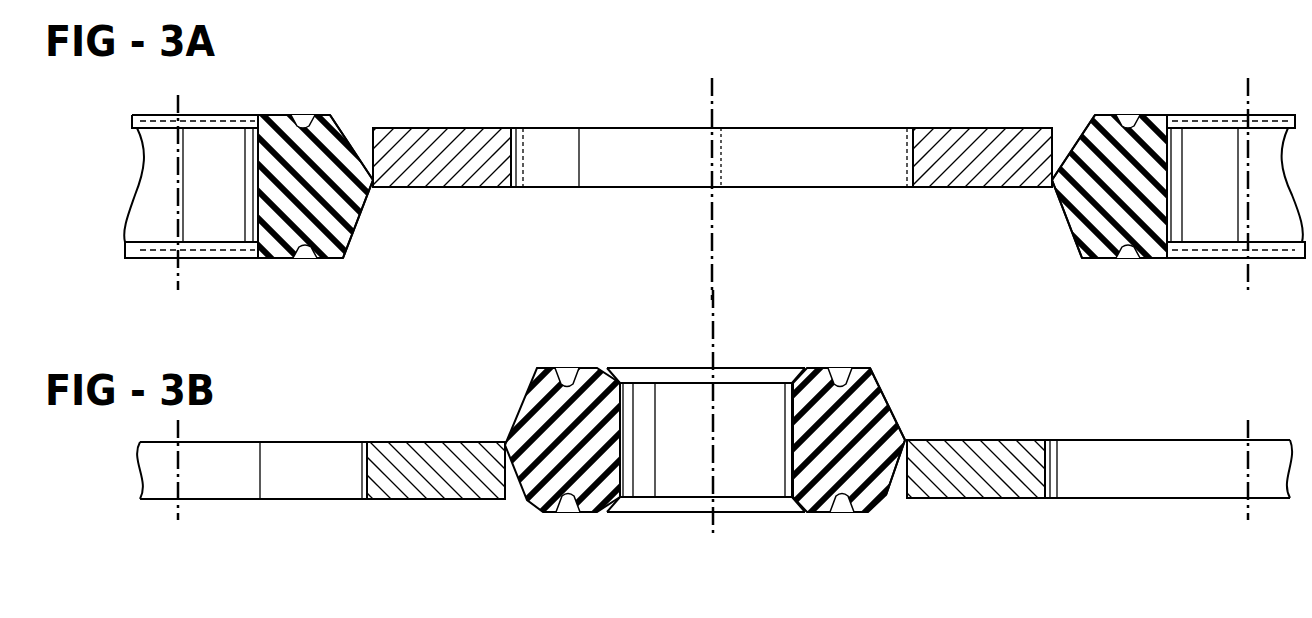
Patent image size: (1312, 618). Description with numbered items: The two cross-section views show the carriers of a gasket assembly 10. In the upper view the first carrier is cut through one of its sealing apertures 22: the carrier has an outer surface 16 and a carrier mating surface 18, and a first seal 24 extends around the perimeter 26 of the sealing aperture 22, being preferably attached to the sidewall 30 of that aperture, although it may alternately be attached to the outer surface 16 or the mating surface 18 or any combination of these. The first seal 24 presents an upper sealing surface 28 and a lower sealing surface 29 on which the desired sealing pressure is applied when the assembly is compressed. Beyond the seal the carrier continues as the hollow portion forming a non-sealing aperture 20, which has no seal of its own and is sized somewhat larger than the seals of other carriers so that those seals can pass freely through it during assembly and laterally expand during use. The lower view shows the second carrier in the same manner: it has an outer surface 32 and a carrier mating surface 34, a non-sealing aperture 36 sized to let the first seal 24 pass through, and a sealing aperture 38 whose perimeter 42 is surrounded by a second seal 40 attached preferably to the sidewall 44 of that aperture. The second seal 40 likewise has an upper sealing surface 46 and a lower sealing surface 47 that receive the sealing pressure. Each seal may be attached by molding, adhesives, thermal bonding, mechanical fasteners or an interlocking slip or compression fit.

In FIG. 3A, the gasket assembly 10 is at (575, 90).
In FIG. 3A, the outer surface 16 is at (493, 128).
In FIG. 3A, the carrier mating surface 18 is at (470, 187).
In FIG. 3A, the non-sealing aperture 20 is at (812, 145).
In FIG. 3A, the sealing aperture 22 is at (202, 172).
In FIG. 3A, the first seal 24 is at (328, 135).
In FIG. 3A, the perimeter 26 is at (373, 130).
In FIG. 3A, the upper sealing surface 28 is at (278, 117).
In FIG. 3A, the lower sealing surface 29 is at (335, 258).
In FIG. 3A, the sidewall 30 is at (366, 192).
In FIG. 3B, the outer surface 32 is at (990, 498).
In FIG. 3B, the carrier mating surface 34 is at (993, 440).
In FIG. 3B, the non-sealing aperture 36 is at (313, 458).
In FIG. 3B, the sealing aperture 38 is at (735, 415).
In FIG. 3B, the second seal 40 is at (878, 382).
In FIG. 3B, the perimeter 42 is at (907, 440).
In FIG. 3B, the sidewall 44 is at (890, 487).
In FIG. 3B, the upper sealing surface 46 is at (540, 368).
In FIG. 3B, the lower sealing surface 47 is at (590, 512).